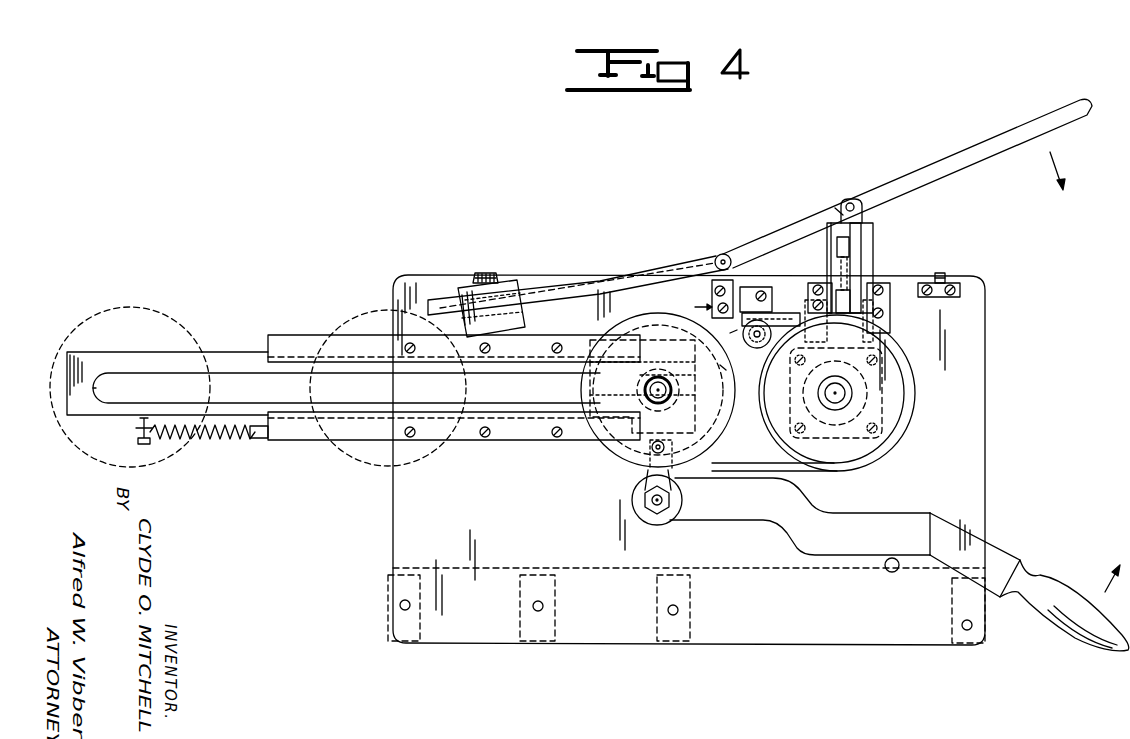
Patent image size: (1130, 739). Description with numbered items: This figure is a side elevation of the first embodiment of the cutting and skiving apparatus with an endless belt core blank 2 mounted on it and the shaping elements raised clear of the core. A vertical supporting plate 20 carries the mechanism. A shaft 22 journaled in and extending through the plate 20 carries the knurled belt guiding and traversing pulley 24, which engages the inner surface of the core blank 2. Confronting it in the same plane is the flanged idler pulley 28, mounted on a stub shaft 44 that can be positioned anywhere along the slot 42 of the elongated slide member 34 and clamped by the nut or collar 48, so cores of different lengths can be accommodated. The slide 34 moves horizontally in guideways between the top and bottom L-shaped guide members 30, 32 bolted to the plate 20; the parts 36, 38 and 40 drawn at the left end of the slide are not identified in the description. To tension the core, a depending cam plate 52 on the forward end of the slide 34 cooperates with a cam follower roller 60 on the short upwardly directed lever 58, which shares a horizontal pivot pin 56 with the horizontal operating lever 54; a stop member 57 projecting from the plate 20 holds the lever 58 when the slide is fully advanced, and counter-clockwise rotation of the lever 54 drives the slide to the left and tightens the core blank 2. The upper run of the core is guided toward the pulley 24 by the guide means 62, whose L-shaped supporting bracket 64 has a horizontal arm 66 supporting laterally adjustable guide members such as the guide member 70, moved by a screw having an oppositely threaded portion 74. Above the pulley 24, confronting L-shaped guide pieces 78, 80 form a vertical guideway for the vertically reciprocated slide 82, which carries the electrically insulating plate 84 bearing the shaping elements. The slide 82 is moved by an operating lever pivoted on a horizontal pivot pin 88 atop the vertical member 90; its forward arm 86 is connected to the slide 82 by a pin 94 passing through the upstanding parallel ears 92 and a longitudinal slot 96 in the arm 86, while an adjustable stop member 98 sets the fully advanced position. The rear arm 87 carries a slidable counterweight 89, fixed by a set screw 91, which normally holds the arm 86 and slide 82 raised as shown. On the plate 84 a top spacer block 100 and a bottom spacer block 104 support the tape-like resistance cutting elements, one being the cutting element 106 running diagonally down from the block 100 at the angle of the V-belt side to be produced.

The endless belt core blank 2 is at (800, 471).
The vertical supporting plate 20 is at (762, 645).
The shaft 22 is at (845, 398).
The belt guiding and traversing pulley 24 is at (908, 388).
The flanged idler pulley 28 is at (150, 310).
The top L-shaped guide member 30 is at (298, 333).
The bottom L-shaped guide member 32 is at (495, 442).
The elongated slide member 34 is at (225, 350).
The spring 36 is at (212, 442).
The anchor bolt 38 is at (135, 440).
The spring fitting 40 is at (262, 440).
The slot 42 is at (143, 395).
The stub shaft 44 is at (672, 392).
The nut or collar 48 is at (636, 390).
The depending cam plate 52 is at (612, 460).
The horizontal operating lever 54 is at (752, 520).
The horizontal pivot pin 56 is at (660, 508).
The stop member 57 is at (882, 570).
The short upwardly directed lever 58 is at (642, 476).
The cam follower roller 60 is at (666, 447).
The guide means 62 is at (735, 332).
The L-shaped supporting bracket 64 is at (753, 293).
The horizontal arm 66 is at (713, 368).
The L-shaped guide member 70 is at (790, 335).
The threaded portion 74 is at (760, 350).
The L-shaped guide piece 78 is at (890, 323).
The L-shaped guide piece 80 is at (810, 293).
The vertically reciprocated slide 82 is at (875, 240).
The electrically insulating plate 84 is at (861, 263).
The forward lever arm 86 is at (993, 135).
The rear lever arm 87 is at (612, 270).
The horizontal pivot pin 88 is at (725, 252).
The slidable counterweight 89 is at (535, 322).
The vertical member 90 is at (704, 296).
The set screw 91 is at (498, 272).
The upstanding parallel ears 92 is at (860, 195).
The pin 94 is at (850, 200).
The longitudinal slot 96 is at (838, 210).
The adjustable stop member 98 is at (948, 283).
The top spacer block 100 is at (836, 247).
The spacer block 104 is at (826, 315).
The cutting element 106 is at (838, 272).